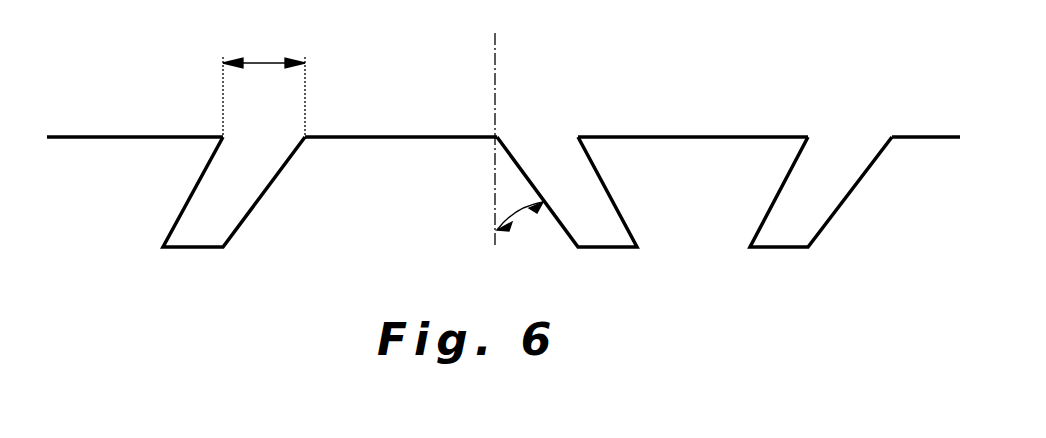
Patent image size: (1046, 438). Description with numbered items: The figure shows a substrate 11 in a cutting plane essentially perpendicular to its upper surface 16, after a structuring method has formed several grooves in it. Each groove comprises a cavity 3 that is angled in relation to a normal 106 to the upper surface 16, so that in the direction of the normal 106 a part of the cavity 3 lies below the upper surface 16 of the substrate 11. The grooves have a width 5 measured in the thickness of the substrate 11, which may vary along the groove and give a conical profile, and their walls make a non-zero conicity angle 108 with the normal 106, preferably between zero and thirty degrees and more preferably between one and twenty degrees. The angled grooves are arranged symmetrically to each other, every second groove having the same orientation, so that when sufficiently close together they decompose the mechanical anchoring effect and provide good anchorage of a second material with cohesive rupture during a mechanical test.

The cavity 3 is at (243, 201).
The width 5 is at (264, 82).
The substrate 11 is at (712, 190).
The upper surface 16 is at (648, 135).
The normal 106 is at (497, 83).
The conicity angle 108 is at (520, 223).